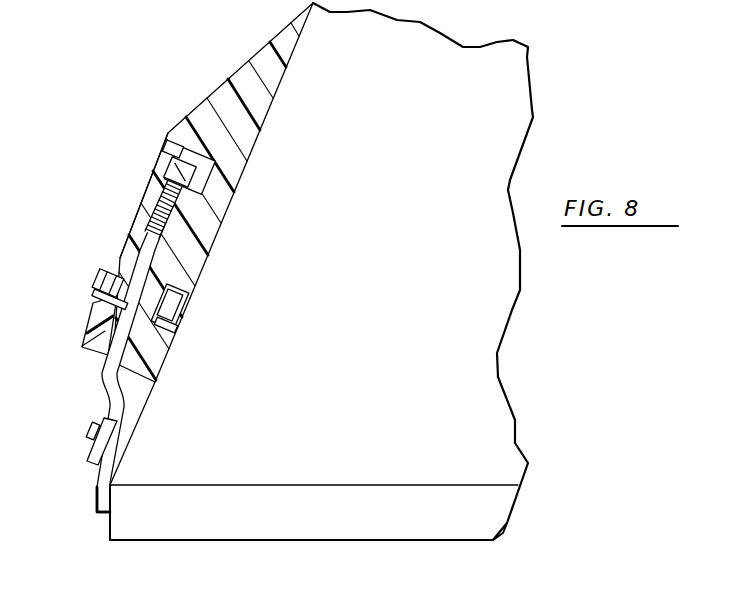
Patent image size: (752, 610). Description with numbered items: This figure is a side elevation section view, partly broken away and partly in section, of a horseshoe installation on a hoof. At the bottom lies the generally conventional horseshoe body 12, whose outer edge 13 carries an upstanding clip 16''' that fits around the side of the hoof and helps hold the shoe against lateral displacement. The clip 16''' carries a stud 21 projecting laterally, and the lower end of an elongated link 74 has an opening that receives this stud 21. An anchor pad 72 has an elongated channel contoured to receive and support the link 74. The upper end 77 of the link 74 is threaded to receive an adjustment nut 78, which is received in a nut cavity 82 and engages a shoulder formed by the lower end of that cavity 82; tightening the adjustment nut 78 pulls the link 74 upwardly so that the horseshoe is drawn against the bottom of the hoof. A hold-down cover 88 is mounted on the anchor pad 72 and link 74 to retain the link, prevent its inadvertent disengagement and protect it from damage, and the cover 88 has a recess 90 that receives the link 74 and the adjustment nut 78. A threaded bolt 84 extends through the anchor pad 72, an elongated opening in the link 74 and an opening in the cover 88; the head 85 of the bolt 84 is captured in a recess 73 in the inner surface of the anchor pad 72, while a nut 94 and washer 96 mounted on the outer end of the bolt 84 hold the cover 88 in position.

The horseshoe body 12 is at (221, 528).
The outer edge 13 is at (110, 522).
The clip 16''' is at (66, 497).
The stud 21 is at (88, 430).
The anchor pad 72 is at (222, 98).
The recess 73 is at (184, 291).
The link 74 is at (100, 373).
The upper end 77 is at (182, 210).
The adjustment nut 78 is at (170, 160).
The nut cavity 82 is at (213, 170).
The threaded bolt 84 is at (173, 328).
The head 85 is at (184, 313).
The hold-down cover 88 is at (140, 205).
The recess 90 is at (165, 147).
The nut 94 is at (112, 277).
The washer 96 is at (100, 284).